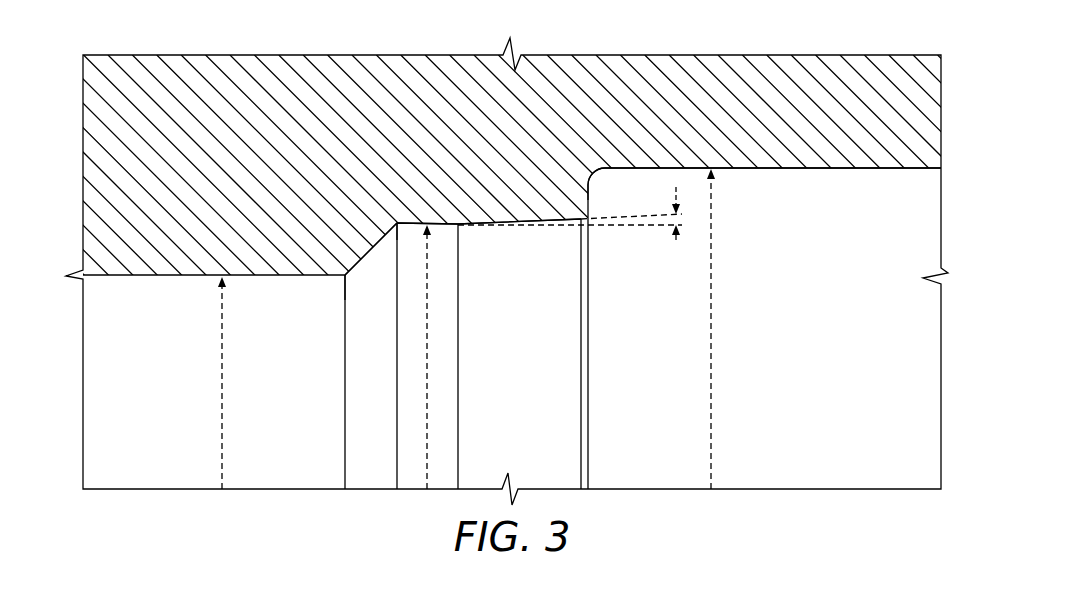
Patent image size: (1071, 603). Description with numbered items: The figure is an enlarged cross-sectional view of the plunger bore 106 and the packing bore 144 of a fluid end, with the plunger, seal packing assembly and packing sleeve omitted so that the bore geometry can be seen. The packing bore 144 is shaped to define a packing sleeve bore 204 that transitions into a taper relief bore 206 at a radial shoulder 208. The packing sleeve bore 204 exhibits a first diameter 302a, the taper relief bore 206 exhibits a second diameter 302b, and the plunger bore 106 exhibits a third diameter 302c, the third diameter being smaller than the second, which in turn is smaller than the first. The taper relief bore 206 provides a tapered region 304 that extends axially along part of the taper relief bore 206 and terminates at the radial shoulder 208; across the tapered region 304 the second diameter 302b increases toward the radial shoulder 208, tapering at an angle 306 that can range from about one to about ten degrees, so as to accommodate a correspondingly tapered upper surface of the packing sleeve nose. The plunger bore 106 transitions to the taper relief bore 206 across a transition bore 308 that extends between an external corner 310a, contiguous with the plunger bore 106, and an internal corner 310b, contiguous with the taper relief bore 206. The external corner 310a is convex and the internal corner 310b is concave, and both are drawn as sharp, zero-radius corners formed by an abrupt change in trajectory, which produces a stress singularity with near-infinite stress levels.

The plunger bore 106 is at (173, 271).
The packing bore 144 is at (873, 165).
The packing sleeve bore 204 is at (760, 165).
The taper relief bore 206 is at (444, 222).
The radial shoulder 208 is at (594, 182).
The first diameter 302a is at (711, 333).
The second diameter 302b is at (427, 350).
The third diameter 302c is at (222, 358).
The tapered region 304 is at (458, 226).
The angle 306 is at (676, 242).
The transition bore 308 is at (382, 250).
The external corner 310a is at (345, 277).
The internal corner 310b is at (397, 222).